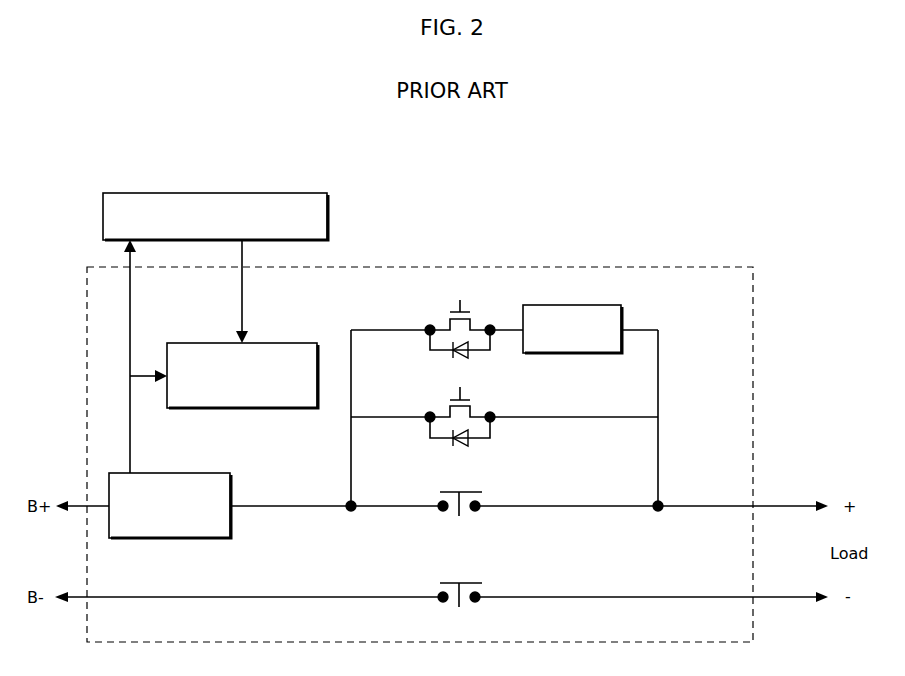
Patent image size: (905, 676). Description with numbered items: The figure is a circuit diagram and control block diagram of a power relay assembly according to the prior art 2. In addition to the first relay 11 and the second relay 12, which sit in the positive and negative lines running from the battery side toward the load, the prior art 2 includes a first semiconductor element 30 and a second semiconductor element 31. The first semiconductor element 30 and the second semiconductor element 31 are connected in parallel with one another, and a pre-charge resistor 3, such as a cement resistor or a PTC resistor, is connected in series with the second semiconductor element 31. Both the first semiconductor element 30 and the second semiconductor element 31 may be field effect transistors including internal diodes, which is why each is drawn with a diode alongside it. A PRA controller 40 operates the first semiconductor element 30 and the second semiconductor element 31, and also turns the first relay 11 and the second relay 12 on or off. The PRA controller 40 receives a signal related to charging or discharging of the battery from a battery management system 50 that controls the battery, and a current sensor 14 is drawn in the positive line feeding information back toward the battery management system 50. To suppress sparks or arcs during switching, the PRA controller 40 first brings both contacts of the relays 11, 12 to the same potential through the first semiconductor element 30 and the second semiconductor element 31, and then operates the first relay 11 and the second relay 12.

The prior art 2 is at (738, 267).
The pre-charge resistor 3 is at (612, 305).
The first relay 11 is at (467, 490).
The second relay 12 is at (467, 581).
The current sensor 14 is at (218, 473).
The first semiconductor element 30 is at (467, 398).
The second semiconductor element 31 is at (467, 310).
The PRA controller 40 is at (300, 343).
The battery management system 50 is at (300, 193).